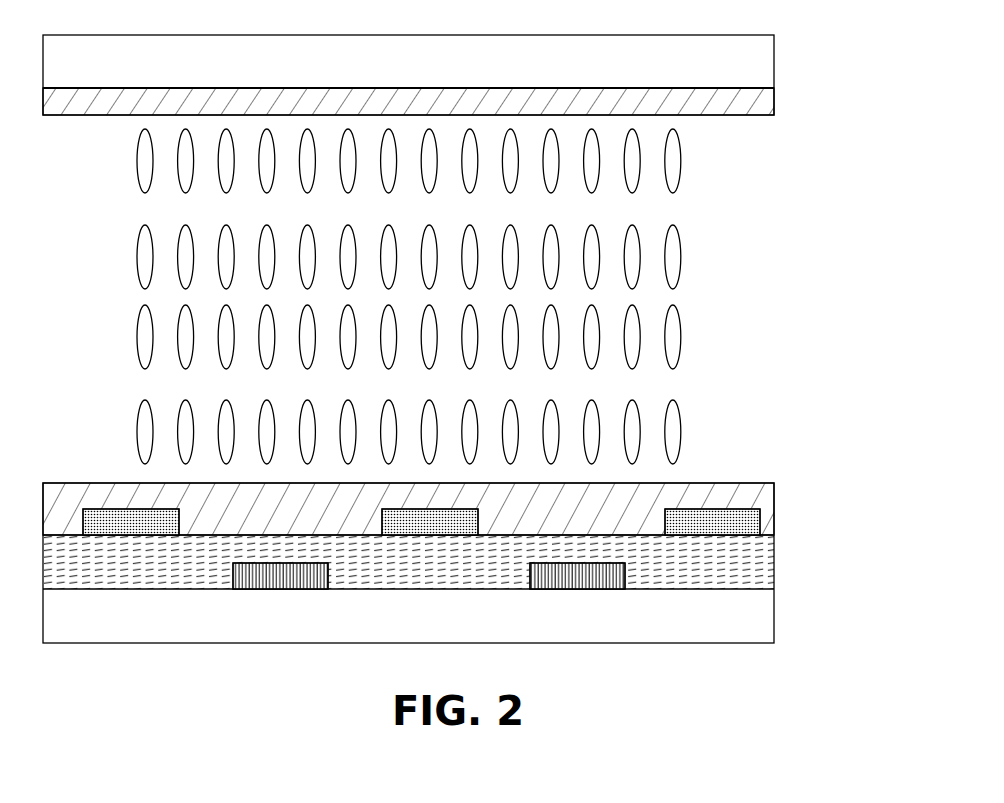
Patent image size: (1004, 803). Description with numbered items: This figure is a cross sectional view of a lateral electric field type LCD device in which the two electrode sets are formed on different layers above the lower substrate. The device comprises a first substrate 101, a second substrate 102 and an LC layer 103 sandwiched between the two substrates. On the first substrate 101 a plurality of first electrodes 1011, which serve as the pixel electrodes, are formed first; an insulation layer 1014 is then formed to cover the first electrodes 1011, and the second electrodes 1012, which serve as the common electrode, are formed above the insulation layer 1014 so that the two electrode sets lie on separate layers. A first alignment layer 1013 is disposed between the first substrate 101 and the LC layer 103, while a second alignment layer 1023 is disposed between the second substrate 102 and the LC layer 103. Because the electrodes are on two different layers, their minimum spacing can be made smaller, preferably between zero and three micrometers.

The first substrate 101 is at (752, 643).
The first electrodes 1011 is at (625, 575).
The second electrodes 1012 is at (760, 510).
The first alignment layer 1013 is at (774, 490).
The insulation layer 1014 is at (774, 562).
The second substrate 102 is at (762, 68).
The second alignment layer 1023 is at (750, 105).
The LC layer 103 is at (692, 289).